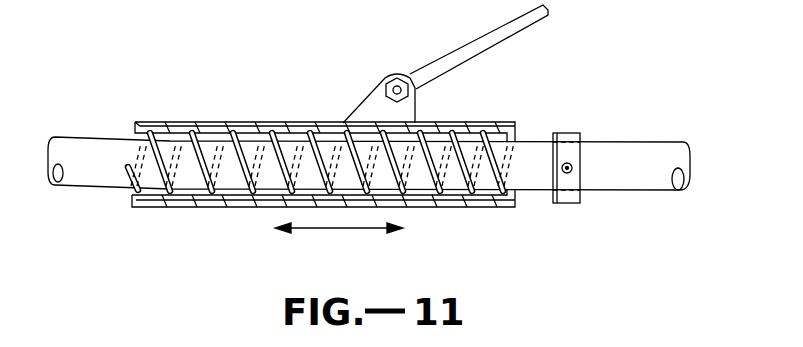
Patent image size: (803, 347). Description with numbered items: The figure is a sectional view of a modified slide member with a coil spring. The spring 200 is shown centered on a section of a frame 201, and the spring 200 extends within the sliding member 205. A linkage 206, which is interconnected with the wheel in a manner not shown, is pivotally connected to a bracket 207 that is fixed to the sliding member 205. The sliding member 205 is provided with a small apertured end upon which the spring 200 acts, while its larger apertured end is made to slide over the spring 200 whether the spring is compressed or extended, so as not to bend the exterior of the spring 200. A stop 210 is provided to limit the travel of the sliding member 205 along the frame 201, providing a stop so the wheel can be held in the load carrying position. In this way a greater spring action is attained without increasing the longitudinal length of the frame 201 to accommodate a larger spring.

The spring 200 is at (155, 188).
The frame 201 is at (632, 182).
The sliding member 205 is at (185, 206).
The linkage 206 is at (502, 35).
The bracket 207 is at (412, 103).
The stop 210 is at (563, 203).